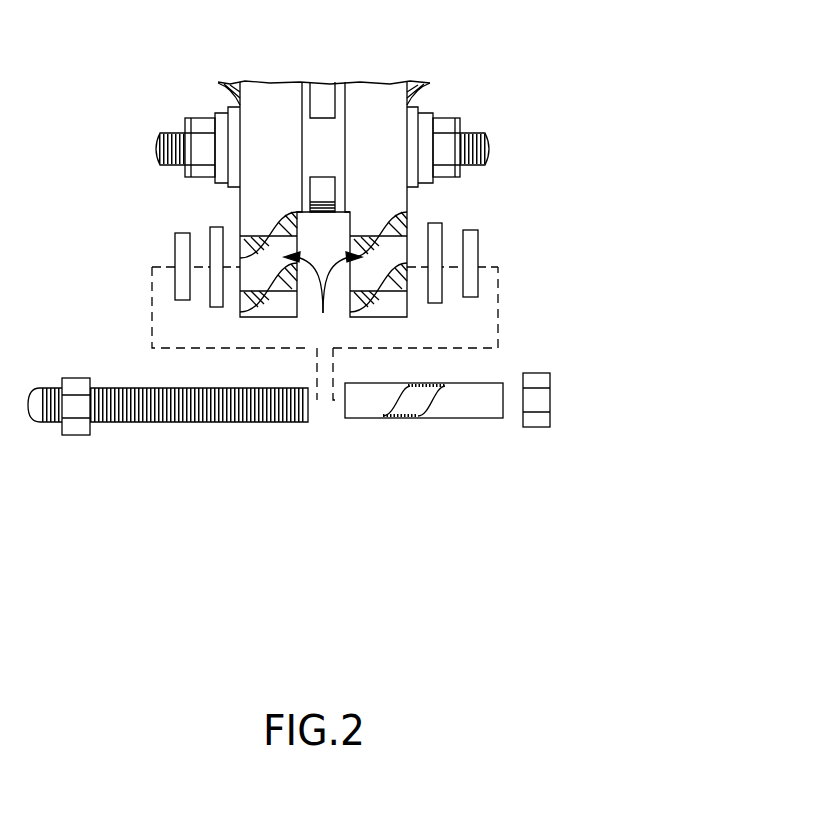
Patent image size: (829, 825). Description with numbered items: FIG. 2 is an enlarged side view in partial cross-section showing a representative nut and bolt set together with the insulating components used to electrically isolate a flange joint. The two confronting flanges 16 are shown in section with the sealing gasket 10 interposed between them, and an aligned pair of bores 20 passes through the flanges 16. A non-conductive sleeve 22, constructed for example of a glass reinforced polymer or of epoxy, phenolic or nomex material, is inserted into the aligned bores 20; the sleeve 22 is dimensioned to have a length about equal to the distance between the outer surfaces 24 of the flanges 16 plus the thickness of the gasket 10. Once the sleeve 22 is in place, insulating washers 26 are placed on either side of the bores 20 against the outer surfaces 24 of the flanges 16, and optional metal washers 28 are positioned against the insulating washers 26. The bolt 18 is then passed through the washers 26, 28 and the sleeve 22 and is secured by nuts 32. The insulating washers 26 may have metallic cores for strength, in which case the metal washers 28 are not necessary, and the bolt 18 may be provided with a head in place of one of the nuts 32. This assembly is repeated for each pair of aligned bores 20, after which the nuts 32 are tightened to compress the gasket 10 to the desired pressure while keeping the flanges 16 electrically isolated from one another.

The sealing gasket 10 is at (324, 167).
The flanges 16 is at (378, 99).
The bolt 18 is at (225, 423).
The bores 20 is at (323, 297).
The non-conductive sleeve 22 is at (463, 418).
The outer surfaces 24 is at (240, 224).
The insulating washers 26 is at (220, 306).
The metal washers 28 is at (186, 234).
The nuts 32 is at (78, 377).